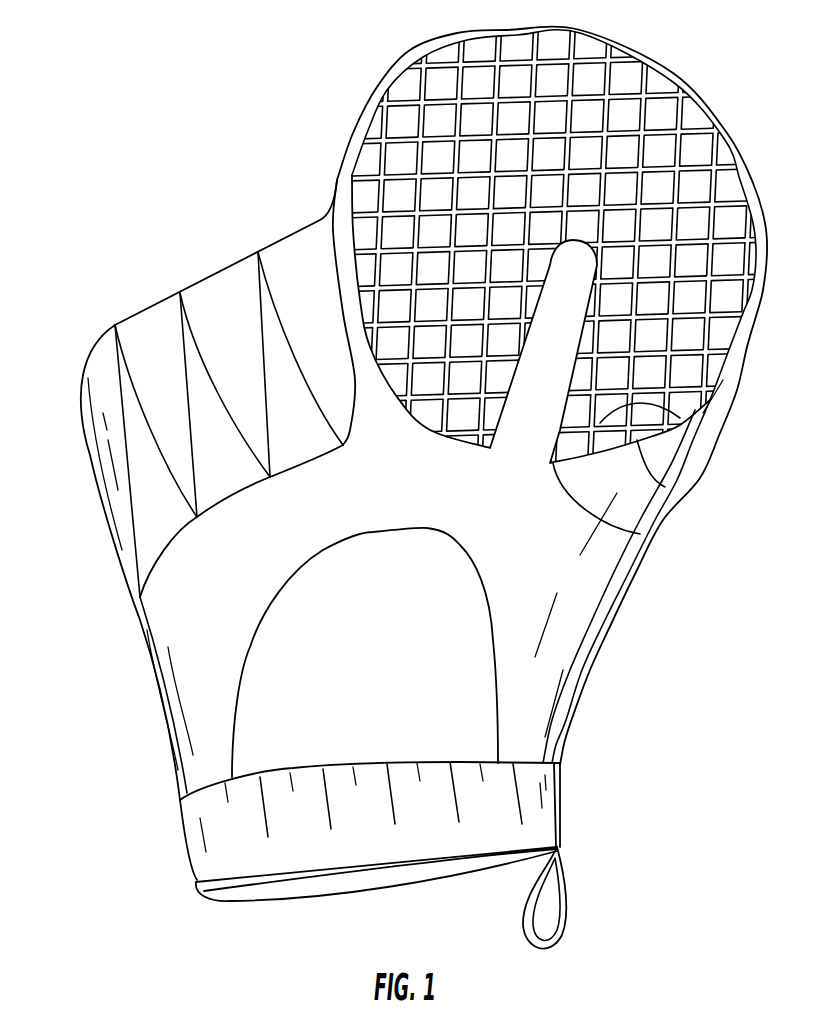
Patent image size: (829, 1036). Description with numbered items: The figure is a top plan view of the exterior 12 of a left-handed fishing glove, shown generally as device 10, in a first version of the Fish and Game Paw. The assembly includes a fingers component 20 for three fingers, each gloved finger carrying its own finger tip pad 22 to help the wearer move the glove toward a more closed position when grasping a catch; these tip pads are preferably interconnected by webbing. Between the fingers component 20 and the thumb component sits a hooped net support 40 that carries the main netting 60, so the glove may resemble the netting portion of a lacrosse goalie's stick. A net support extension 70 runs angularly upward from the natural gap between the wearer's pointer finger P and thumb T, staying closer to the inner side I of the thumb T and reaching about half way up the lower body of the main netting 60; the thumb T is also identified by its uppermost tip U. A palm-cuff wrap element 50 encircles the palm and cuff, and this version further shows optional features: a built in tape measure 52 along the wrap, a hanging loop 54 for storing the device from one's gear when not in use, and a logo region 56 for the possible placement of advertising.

The fishing glove/mitt device 10 is at (758, 18).
The glove/mitt exterior 12 is at (534, 530).
The fingers component 20 is at (80, 457).
The finger tip pads 22 is at (283, 253).
The hooped net support 40 is at (376, 88).
The palm-cuff wrap element 50 is at (568, 812).
The built in tape measure 52 is at (545, 790).
The hanging loop 54 is at (572, 895).
The logo region 56 is at (375, 657).
The main netting 60 is at (610, 97).
The net support extension 70 is at (530, 403).
The pointer finger P is at (430, 303).
The uppermost tip of thumb U is at (680, 418).
The thumb T is at (665, 487).
The inner side of thumb I is at (640, 534).